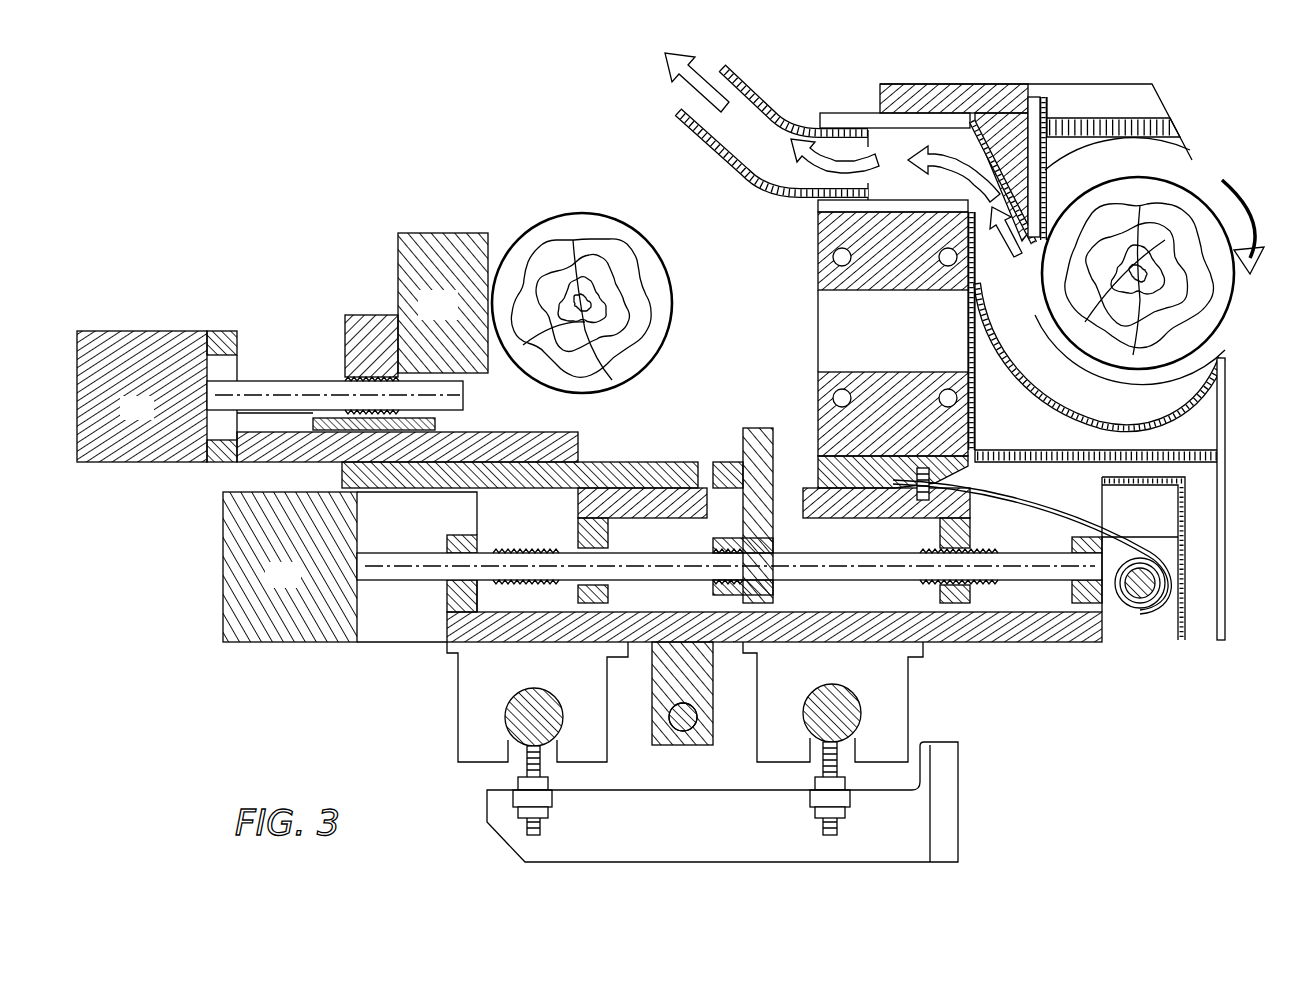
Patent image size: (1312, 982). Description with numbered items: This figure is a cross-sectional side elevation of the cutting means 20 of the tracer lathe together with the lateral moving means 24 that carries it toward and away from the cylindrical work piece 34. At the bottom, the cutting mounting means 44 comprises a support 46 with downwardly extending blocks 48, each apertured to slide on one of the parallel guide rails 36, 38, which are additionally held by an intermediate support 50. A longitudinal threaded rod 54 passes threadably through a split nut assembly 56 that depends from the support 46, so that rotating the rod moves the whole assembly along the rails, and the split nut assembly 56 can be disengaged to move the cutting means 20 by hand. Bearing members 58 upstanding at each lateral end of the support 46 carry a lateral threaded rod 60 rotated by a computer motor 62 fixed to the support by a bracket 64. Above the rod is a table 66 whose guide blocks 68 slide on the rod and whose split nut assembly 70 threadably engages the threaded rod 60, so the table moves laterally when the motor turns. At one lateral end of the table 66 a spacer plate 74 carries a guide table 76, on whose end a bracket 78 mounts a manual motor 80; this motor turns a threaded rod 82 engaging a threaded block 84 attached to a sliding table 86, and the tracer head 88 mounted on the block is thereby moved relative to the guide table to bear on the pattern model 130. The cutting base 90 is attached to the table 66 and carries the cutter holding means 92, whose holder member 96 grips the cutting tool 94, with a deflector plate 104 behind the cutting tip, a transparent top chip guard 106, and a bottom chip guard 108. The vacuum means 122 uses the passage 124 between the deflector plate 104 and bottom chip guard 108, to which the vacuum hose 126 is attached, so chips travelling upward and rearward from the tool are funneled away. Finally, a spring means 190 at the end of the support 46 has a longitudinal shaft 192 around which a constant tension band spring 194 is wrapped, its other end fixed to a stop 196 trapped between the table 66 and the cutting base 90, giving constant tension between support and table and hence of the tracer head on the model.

The cutting means 20 is at (1234, 119).
The lateral moving means 24 is at (163, 572).
The cylindrical work piece 34 is at (1227, 311).
The guide rail 36 is at (851, 715).
The guide rail 38 is at (512, 717).
The cutting mounting means 44 is at (420, 668).
The support 46 is at (993, 643).
The blocks 48 is at (593, 762).
The intermediate support 50 is at (762, 858).
The threaded rod 54 is at (683, 731).
The split nut assembly 56 is at (713, 702).
The bearing members 58 is at (478, 547).
The threaded rod 60 is at (830, 581).
The computer motor 62 is at (298, 586).
The bracket 64 is at (412, 628).
The table 66 is at (868, 520).
The guide blocks 68 is at (608, 536).
The split nut assembly 70 is at (776, 540).
The spacer plate 74 is at (636, 462).
The guide table 76 is at (548, 432).
The bracket 78 is at (226, 331).
The manual motor 80 is at (152, 420).
The threaded rod 82 is at (268, 381).
The threaded block 84 is at (346, 340).
The sliding table 86 is at (436, 424).
The tracer head 88 is at (452, 316).
The cutting base 90 is at (818, 398).
The cutter holding means 92 is at (1031, 81).
The cutting tool 94 is at (1048, 100).
The holder member 96 is at (902, 84).
The deflector plate 104 is at (1047, 140).
The top chip guard 106 is at (1163, 108).
The bottom chip guard 108 is at (1227, 394).
The vacuum means 122 is at (772, 105).
The passage 124 is at (982, 272).
The vacuum hose 126 is at (772, 200).
The pattern model 130 is at (572, 212).
The spring means 190 is at (1122, 616).
The longitudinal shaft 192 is at (1143, 590).
The constant tension band spring 194 is at (1076, 509).
The stop 196 is at (950, 478).